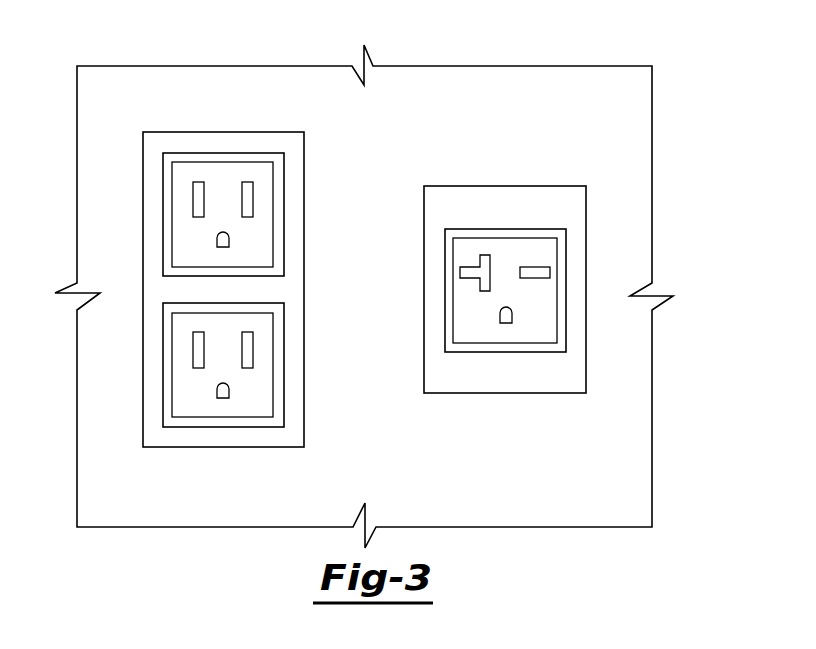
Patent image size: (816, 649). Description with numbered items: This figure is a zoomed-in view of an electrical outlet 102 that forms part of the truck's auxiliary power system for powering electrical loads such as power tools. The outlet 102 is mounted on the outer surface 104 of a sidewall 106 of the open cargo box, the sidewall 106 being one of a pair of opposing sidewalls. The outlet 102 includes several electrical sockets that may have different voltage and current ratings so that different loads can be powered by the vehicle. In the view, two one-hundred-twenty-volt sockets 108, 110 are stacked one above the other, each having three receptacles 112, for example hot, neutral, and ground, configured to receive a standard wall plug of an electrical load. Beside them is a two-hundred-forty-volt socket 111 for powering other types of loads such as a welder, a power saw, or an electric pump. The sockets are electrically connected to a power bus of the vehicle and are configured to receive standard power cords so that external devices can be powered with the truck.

The electrical outlet 102 is at (408, 95).
The outer surface 104 is at (626, 107).
The sidewall 106 is at (603, 66).
The 120-volt socket 108 is at (222, 132).
The 120-volt socket 110 is at (183, 382).
The 240-volt socket 111 is at (586, 218).
The receptacles 112 is at (254, 198).